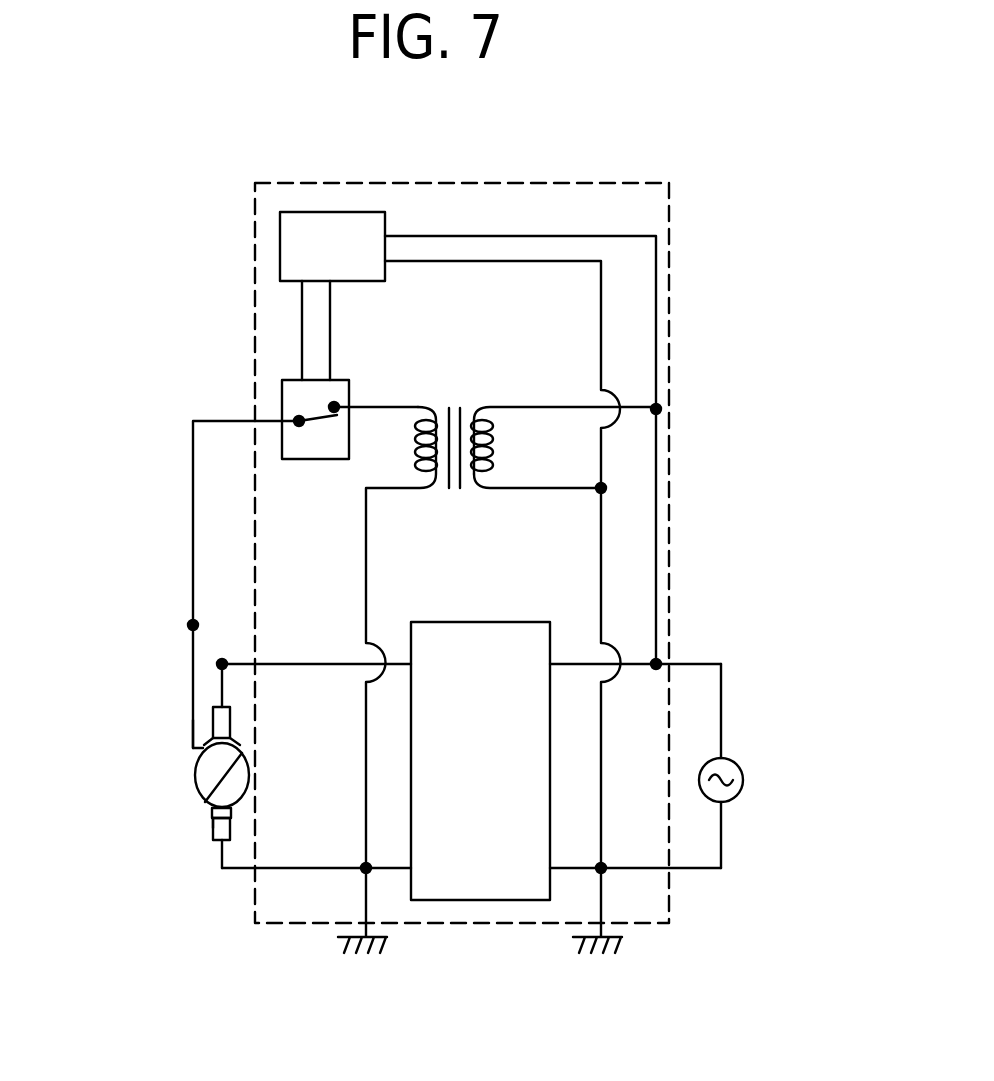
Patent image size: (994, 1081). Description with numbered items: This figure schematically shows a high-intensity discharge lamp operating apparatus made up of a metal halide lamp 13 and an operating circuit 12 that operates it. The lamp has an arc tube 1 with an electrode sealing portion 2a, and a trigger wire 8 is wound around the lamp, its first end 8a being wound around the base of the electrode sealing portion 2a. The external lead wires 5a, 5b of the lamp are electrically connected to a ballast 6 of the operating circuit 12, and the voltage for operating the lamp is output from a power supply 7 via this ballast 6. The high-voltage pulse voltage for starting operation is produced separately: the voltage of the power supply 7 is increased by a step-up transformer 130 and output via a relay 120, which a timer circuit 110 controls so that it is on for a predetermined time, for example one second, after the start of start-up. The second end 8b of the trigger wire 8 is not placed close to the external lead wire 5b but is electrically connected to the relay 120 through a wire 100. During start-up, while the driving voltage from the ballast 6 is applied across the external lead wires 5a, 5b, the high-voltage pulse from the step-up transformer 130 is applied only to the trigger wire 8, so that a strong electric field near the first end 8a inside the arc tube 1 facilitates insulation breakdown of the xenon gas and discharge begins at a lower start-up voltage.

The arc tube 1 is at (250, 768).
The electrode sealing portion 2a is at (210, 838).
The external lead wire 5a is at (232, 867).
The external lead wire 5b is at (222, 682).
The ballast 6 is at (482, 900).
The power supply 7 is at (740, 767).
The trigger wire 8 is at (192, 730).
The first end of trigger wire 8a is at (205, 810).
The second end of trigger wire 8b is at (193, 625).
The operating circuit 12 is at (669, 905).
The metal halide lamp 13 is at (200, 825).
The wire 100 is at (193, 503).
The timer circuit 110 is at (280, 250).
The relay 120 is at (315, 459).
The step-up transformer 130 is at (504, 391).